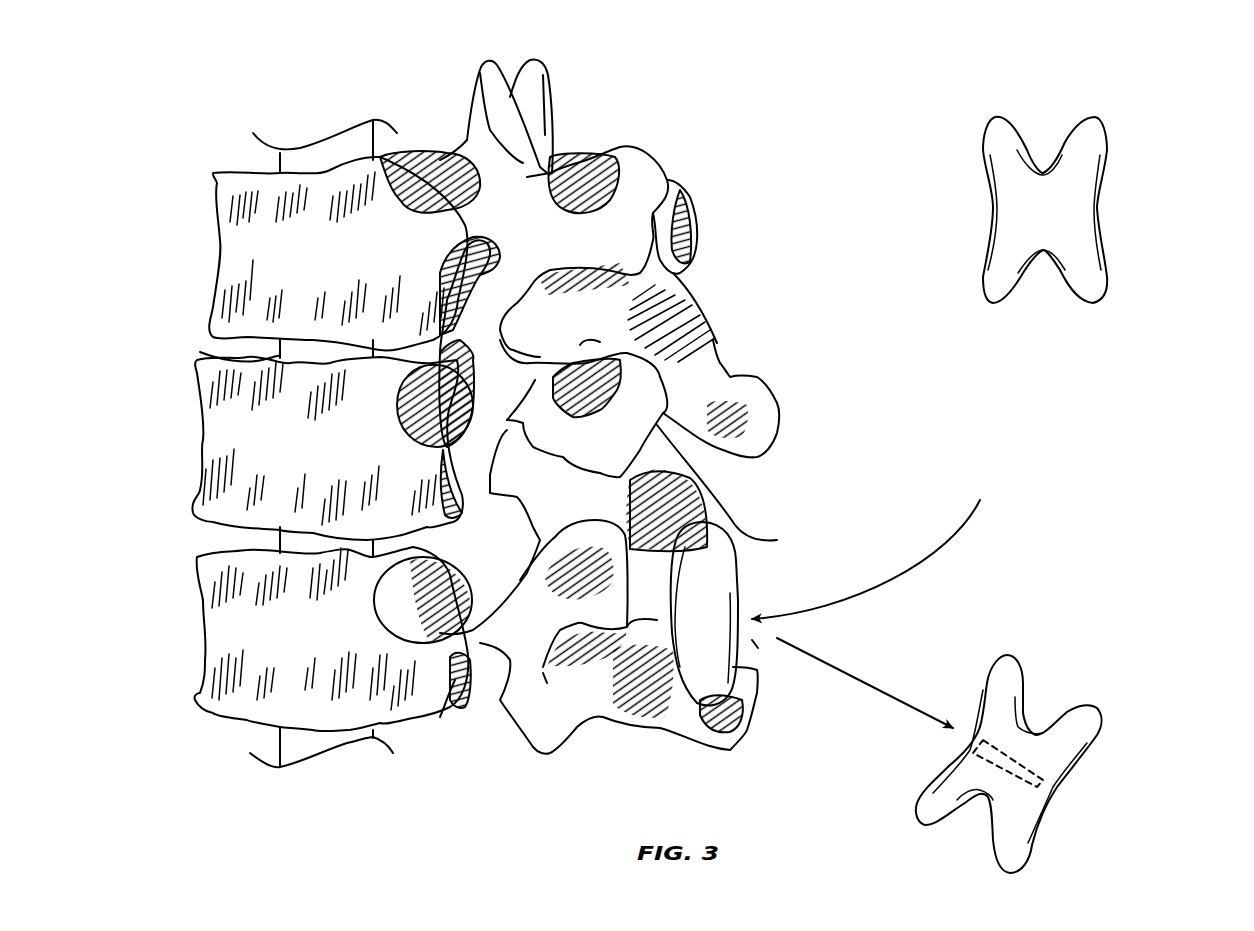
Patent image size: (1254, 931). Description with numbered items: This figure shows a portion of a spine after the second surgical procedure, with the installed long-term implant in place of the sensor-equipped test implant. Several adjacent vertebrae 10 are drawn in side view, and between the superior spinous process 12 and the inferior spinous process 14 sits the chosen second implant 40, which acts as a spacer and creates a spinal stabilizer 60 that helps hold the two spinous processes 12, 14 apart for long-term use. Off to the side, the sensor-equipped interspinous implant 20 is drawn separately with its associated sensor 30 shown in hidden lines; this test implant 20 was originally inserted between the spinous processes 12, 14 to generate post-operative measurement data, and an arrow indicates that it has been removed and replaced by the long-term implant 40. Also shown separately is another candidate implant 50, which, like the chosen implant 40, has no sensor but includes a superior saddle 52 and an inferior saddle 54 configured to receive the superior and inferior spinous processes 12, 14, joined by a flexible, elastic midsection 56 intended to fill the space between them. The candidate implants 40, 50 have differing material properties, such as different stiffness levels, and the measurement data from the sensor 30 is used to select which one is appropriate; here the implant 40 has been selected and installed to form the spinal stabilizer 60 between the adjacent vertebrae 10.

The vertebrae 10 is at (282, 458).
The superior spinous process 12 is at (687, 500).
The inferior spinous process 14 is at (722, 727).
The interspinous implant 20 is at (1080, 667).
The sensor 30 is at (1043, 782).
The second implant 40 is at (710, 560).
The candidate implant 50 is at (1125, 210).
The superior saddle 52 is at (1047, 123).
The inferior saddle 54 is at (1043, 290).
The midsection 56 is at (1010, 220).
The spinal stabilizer 60 is at (758, 652).